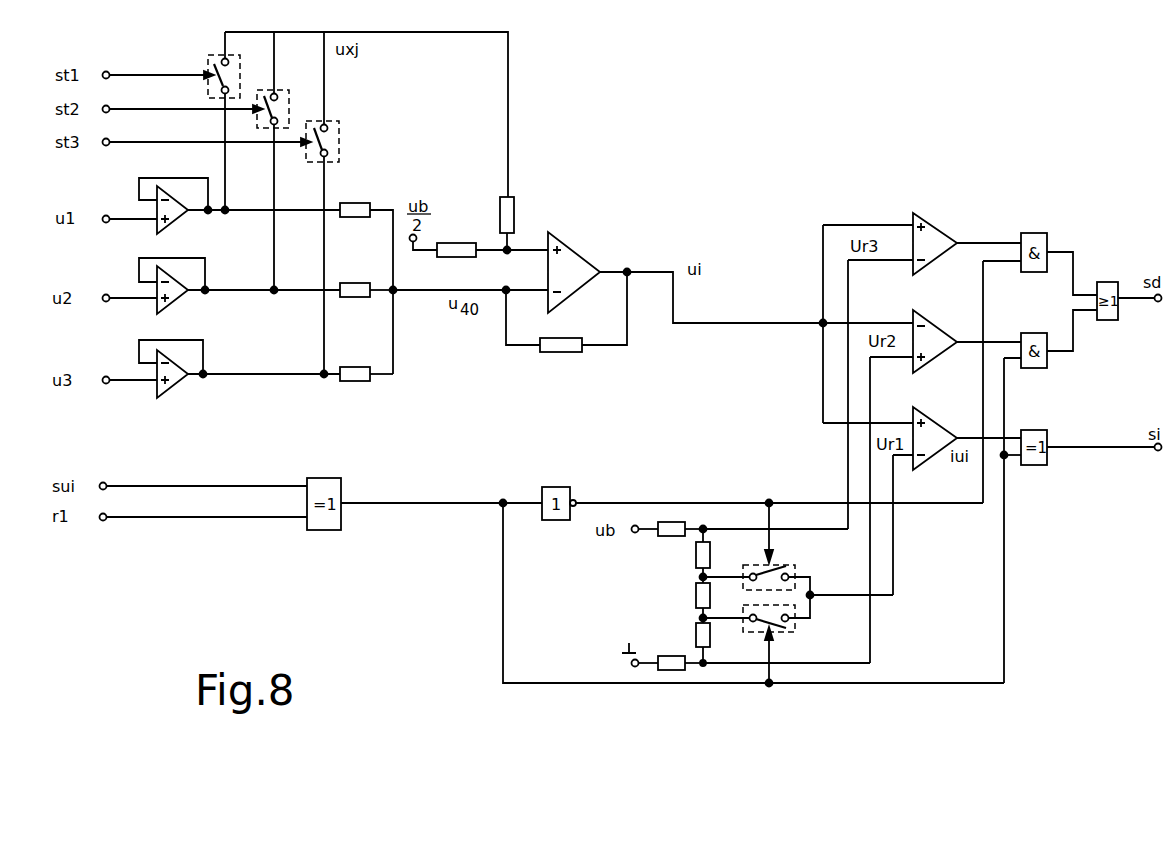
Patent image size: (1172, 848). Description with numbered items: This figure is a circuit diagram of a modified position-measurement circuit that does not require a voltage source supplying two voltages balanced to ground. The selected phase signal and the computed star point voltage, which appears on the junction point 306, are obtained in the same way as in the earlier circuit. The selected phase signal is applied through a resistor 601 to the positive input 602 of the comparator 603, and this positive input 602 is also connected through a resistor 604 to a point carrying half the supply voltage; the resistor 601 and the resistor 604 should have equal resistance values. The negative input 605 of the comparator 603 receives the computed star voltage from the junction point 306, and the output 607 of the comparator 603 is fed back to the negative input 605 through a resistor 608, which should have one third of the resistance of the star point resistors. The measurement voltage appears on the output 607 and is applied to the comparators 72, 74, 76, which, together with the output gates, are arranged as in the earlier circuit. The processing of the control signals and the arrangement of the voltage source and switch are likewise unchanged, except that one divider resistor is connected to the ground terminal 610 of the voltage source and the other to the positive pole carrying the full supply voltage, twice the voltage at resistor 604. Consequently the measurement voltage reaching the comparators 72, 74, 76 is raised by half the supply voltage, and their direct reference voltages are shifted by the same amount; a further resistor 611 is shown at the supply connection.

The junction point 306 is at (395, 293).
The resistor 601 is at (513, 207).
The positive input 602 is at (547, 254).
The comparator 603 is at (572, 268).
The resistor 604 is at (463, 257).
The negative input 605 is at (547, 296).
The output 607 is at (607, 284).
The resistor 608 is at (560, 352).
The ground terminal 610 is at (634, 670).
The resistor 611 is at (634, 536).
The comparator 72 is at (943, 228).
The comparator 74 is at (943, 326).
The comparator 76 is at (943, 429).